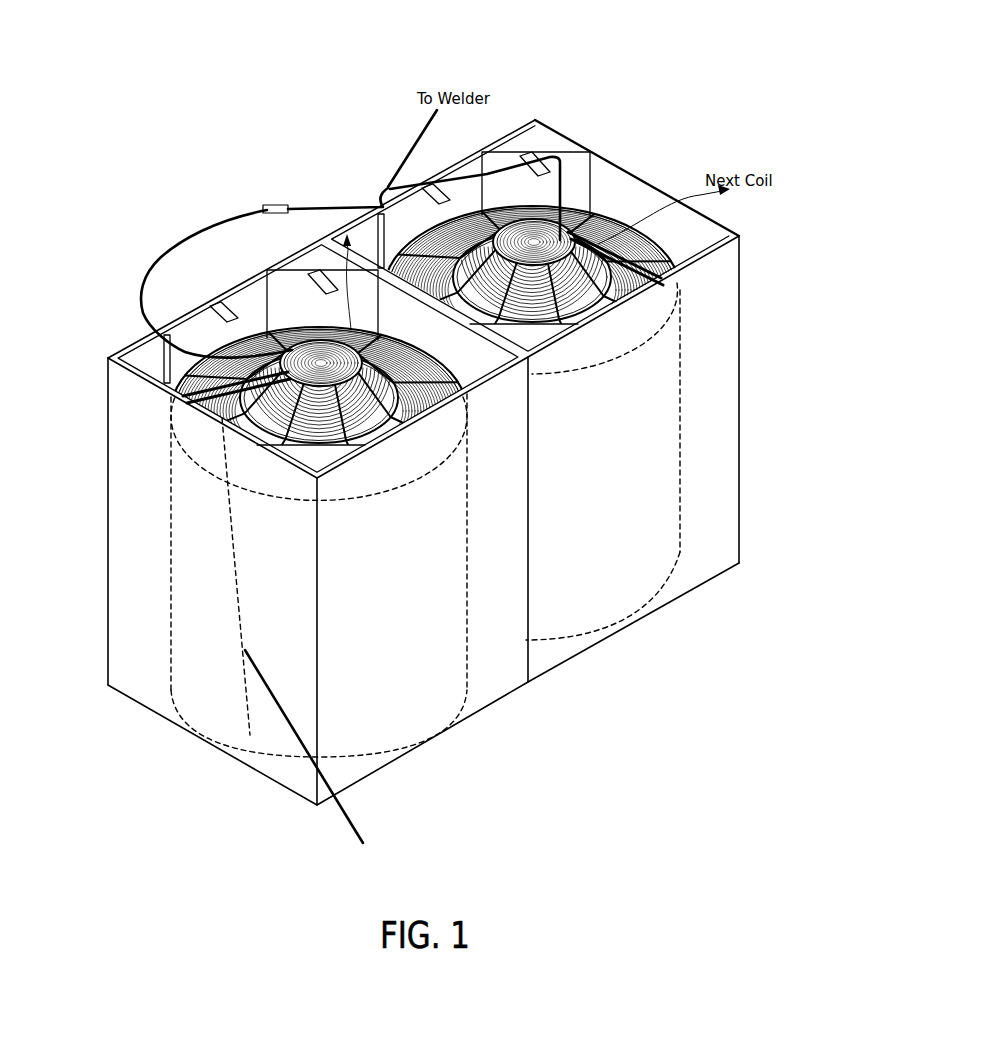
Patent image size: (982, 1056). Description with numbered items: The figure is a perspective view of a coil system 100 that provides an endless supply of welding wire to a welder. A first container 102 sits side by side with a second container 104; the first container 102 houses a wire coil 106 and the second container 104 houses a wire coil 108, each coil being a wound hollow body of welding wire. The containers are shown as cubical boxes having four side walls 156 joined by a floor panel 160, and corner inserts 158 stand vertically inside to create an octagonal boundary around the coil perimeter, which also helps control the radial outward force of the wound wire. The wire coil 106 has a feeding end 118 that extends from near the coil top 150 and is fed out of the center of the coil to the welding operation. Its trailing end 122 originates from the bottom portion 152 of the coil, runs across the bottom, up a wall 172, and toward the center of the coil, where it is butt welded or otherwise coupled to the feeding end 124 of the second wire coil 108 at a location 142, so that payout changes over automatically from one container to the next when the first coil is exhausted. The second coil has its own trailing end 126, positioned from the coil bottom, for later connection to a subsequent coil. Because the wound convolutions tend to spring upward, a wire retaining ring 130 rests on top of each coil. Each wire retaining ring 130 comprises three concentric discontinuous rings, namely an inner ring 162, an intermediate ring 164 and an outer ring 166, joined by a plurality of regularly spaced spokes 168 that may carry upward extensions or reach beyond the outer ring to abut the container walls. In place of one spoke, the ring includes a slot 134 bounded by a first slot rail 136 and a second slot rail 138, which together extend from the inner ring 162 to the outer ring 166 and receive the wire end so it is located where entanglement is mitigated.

The coil system 100 is at (122, 75).
The first container 102 is at (100, 614).
The second container 104 is at (748, 453).
The wire coil 106 is at (233, 673).
The wire coil 108 is at (628, 553).
The feeding end 118 is at (273, 207).
The trailing end 122 is at (190, 382).
The feeding end 124 is at (562, 177).
The trailing end 126 is at (640, 268).
The wire retaining ring 130 is at (606, 192).
The slot 134 is at (620, 282).
The first slot rail 136 is at (739, 236).
The second slot rail 138 is at (633, 287).
The location 142 is at (273, 205).
The top 150 is at (470, 370).
The bottom portion 152 is at (363, 752).
The side walls 156 is at (495, 647).
The corner inserts 158 is at (170, 335).
The floor panel 160 is at (157, 692).
The inner ring 162 is at (420, 410).
The intermediate ring 164 is at (503, 558).
The outer ring 166 is at (447, 381).
The spokes 168 is at (343, 440).
The wall 172 is at (137, 588).